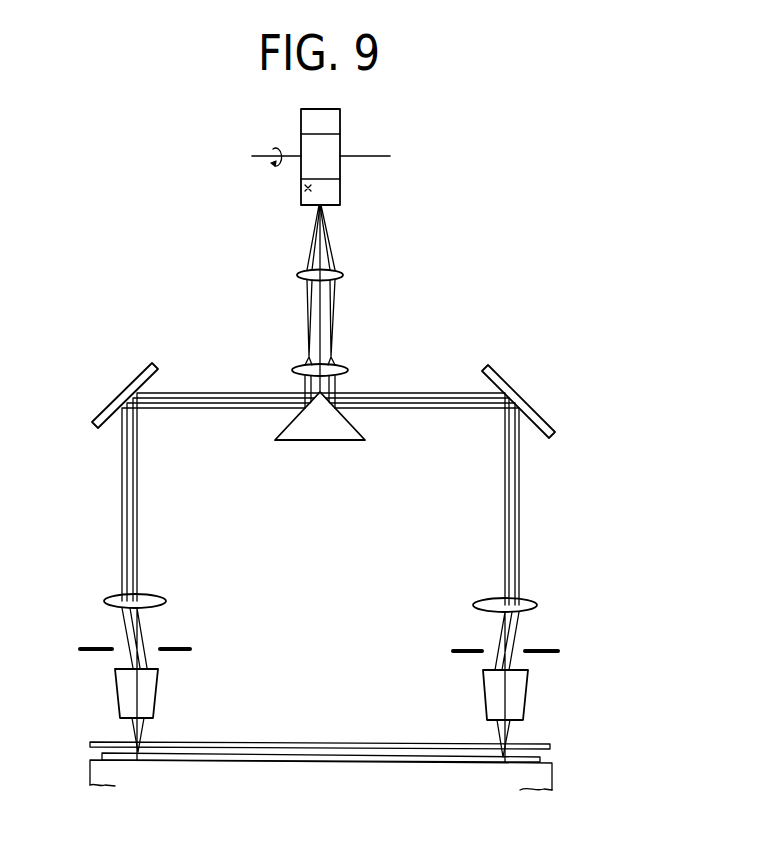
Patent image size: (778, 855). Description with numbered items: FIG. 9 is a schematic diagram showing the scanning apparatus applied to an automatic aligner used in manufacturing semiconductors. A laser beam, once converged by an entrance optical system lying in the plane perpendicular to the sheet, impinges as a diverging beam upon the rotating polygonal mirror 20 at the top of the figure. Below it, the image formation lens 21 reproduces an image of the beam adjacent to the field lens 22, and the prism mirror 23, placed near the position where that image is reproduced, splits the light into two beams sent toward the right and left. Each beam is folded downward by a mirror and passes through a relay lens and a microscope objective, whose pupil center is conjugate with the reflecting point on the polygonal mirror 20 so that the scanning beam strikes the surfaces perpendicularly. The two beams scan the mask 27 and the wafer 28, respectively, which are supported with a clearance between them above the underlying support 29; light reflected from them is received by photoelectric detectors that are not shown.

The polygonal mirror 20 is at (341, 170).
The image formation lens 21 is at (344, 275).
The field lens 22 is at (349, 368).
The prism mirror 23 is at (316, 442).
The mask 27 is at (550, 745).
The wafer 28 is at (540, 760).
The substrate 29 is at (552, 775).